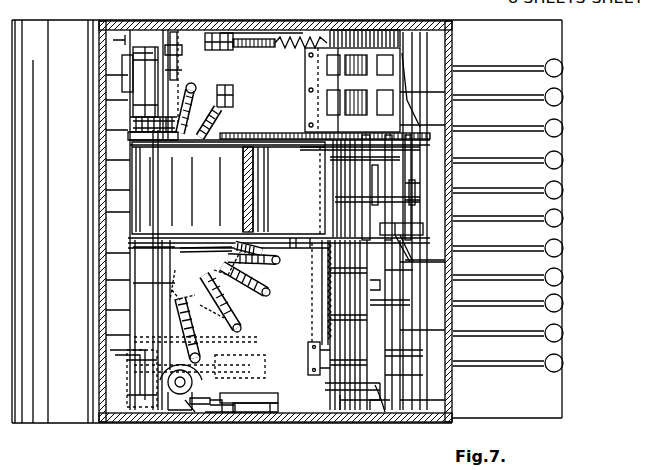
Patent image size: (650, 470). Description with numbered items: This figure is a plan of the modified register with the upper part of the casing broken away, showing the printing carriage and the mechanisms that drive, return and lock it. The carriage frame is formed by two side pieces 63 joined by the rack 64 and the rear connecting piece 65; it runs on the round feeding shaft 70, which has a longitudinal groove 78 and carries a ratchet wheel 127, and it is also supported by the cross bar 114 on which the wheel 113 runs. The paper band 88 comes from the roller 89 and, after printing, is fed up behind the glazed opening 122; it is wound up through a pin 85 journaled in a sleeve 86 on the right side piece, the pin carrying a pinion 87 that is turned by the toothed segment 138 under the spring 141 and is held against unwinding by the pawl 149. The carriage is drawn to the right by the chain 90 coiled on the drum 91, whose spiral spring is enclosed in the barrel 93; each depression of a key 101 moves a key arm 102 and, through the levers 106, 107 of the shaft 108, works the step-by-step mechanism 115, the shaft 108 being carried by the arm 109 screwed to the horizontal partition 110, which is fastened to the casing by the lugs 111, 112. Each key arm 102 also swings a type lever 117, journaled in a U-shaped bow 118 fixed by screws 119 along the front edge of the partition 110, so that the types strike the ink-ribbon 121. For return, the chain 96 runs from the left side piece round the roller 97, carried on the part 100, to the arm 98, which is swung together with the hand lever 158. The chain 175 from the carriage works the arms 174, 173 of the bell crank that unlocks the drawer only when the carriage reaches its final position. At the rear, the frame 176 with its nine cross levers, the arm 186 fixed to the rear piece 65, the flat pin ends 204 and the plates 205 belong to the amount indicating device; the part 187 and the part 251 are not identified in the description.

The ratchet wheel 127 is at (138, 32).
The barrel 93 is at (158, 32).
The drum 91 is at (185, 32).
The pawl 149 is at (202, 32).
The pinion 87 is at (233, 33).
The lug 112 is at (257, 34).
The toothed segment 138 is at (280, 45).
The spring 141 is at (320, 37).
The frame 176 is at (393, 32).
The link 187 is at (405, 60).
The key arm 102 is at (498, 69).
The key 101 is at (545, 63).
The chain 90 is at (184, 88).
The sleeve 86 is at (234, 85).
The pin 85 is at (233, 123).
The plate 205 is at (337, 82).
The flat end 204 is at (345, 107).
The arm 109 is at (430, 130).
The paper band 88 is at (122, 160).
The arm 186 is at (430, 147).
The glazed opening 122 is at (100, 193).
The side piece 63 is at (268, 145).
The lever 107 is at (335, 162).
The roller 89 is at (228, 189).
The rack 64 is at (372, 192).
The wheel 113 is at (418, 192).
The rear connecting piece 65 is at (445, 233).
The step-by-step mechanism 115 is at (440, 252).
The chain 96 is at (183, 262).
The feeding shaft 70 is at (156, 292).
The longitudinal groove 78 is at (156, 310).
The screw 119 is at (280, 260).
The type lever 117 is at (270, 280).
The U-shaped bow 118 is at (240, 320).
The horizontal partition 110 is at (216, 315).
The cross bar 114 is at (446, 296).
The ink-ribbon 121 is at (140, 326).
The chain 175 is at (322, 324).
The shaft 108 is at (405, 320).
The arm 174 is at (308, 358).
The bracket 251 is at (122, 352).
The roller 97 is at (204, 398).
The arm 98 is at (246, 400).
The arm 173 is at (325, 390).
The part 100 is at (190, 413).
The lever 158 is at (222, 412).
The lug 111 is at (272, 412).
The lever 106 is at (385, 413).